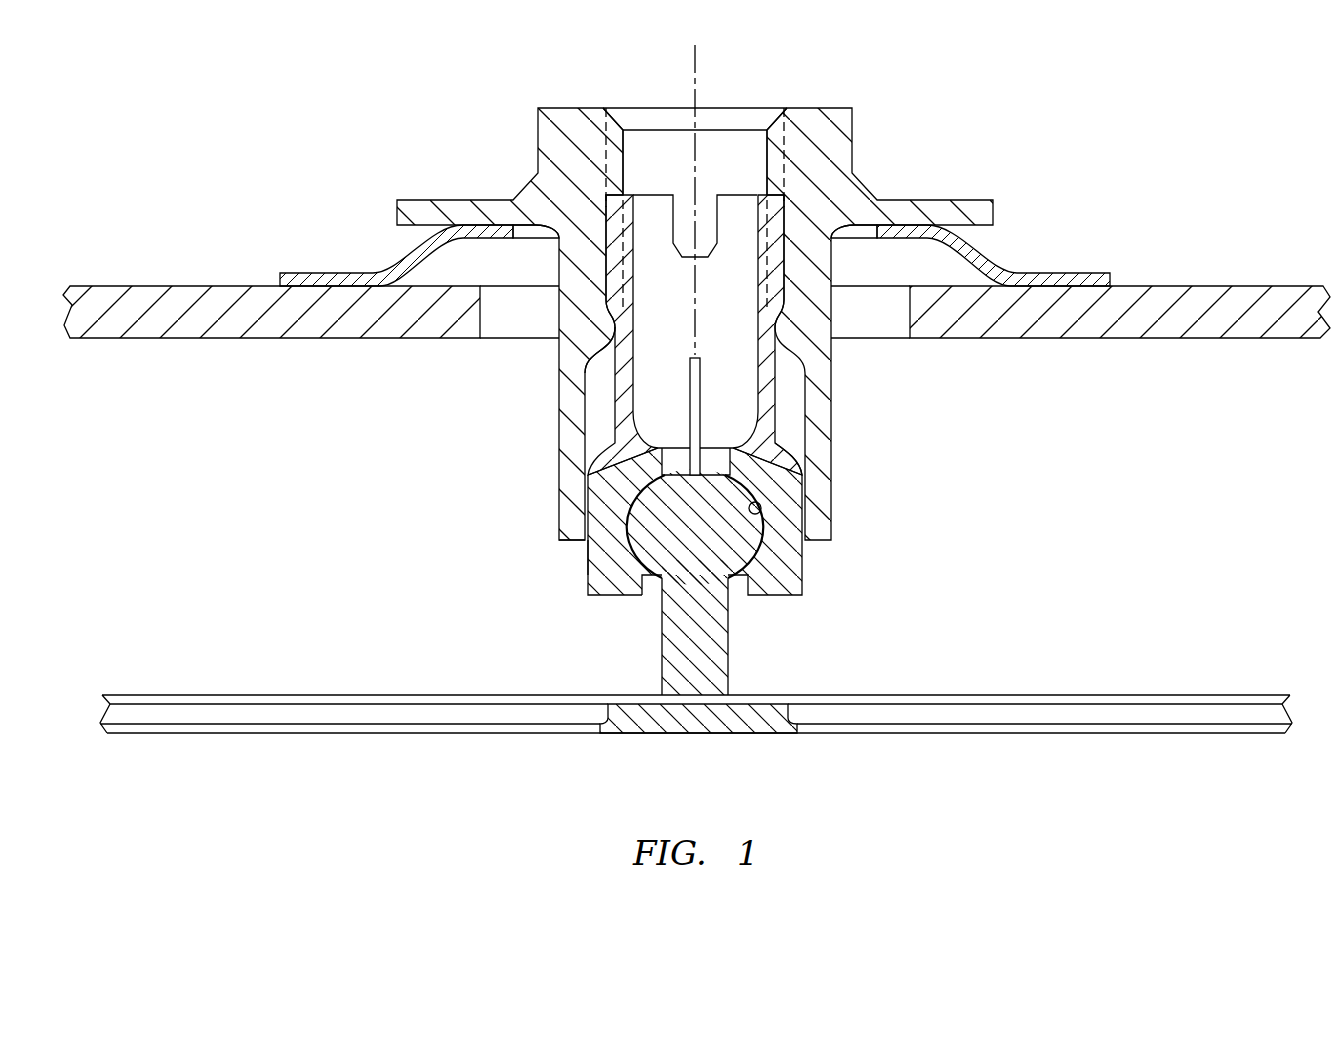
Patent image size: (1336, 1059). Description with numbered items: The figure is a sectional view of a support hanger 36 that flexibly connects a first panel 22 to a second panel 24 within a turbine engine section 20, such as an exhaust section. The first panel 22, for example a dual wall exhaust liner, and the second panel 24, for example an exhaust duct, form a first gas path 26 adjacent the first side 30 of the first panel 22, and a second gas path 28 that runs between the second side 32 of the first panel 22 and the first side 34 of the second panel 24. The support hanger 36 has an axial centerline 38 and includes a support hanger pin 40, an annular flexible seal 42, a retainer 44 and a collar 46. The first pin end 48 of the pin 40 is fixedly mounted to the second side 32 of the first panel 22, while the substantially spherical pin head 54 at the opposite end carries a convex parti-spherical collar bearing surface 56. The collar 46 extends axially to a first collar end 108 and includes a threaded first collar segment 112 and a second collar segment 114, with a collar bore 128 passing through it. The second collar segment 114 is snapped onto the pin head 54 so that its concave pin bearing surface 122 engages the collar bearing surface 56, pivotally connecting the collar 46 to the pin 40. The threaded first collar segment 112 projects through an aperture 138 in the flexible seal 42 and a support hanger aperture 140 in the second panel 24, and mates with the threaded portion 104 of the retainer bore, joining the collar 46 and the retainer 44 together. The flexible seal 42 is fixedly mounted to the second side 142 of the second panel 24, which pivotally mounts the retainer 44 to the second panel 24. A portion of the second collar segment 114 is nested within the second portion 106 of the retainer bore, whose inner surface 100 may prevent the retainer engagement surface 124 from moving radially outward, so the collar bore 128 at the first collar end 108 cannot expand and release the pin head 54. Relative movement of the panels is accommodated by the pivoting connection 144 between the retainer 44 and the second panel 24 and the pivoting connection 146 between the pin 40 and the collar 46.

The turbine engine section 20 is at (759, 370).
The first panel 22 is at (696, 720).
The second panel 24 is at (144, 283).
The first gas path 26 is at (1055, 831).
The second gas path 28 is at (1082, 518).
The first side of the first panel 30 is at (1220, 740).
The second side of the first panel 32 is at (1207, 693).
The first side of the second panel 34 is at (1238, 340).
The support hanger 36 is at (714, 301).
The axial centerline 38 is at (695, 66).
The support hanger pin 40 is at (733, 642).
The support hanger annular flexible seal 42 is at (1005, 267).
The support hanger retainer 44 is at (695, 333).
The support hanger collar 46 is at (675, 558).
The first pin end 48 is at (690, 700).
The pin head 54 is at (698, 524).
The collar bearing surface 56 is at (766, 528).
The inner surface 100 is at (598, 440).
The threaded portion of the retainer bore 104 is at (733, 148).
The second portion of the retainer bore 106 is at (794, 448).
The first collar end 108 is at (790, 594).
The threaded first collar segment 112 is at (749, 291).
The second collar segment 114 is at (574, 551).
The pin bearing surface 122 is at (761, 508).
The retainer engagement surface 124 is at (587, 580).
The collar bore 128 is at (644, 590).
The aperture in the flexible seal 138 is at (864, 232).
The support hanger aperture 140 is at (518, 318).
The second side of the second panel 142 is at (1120, 325).
The pivoting connection between retainer and second panel 144 is at (331, 254).
The pivoting connection between pin and collar 146 is at (568, 567).